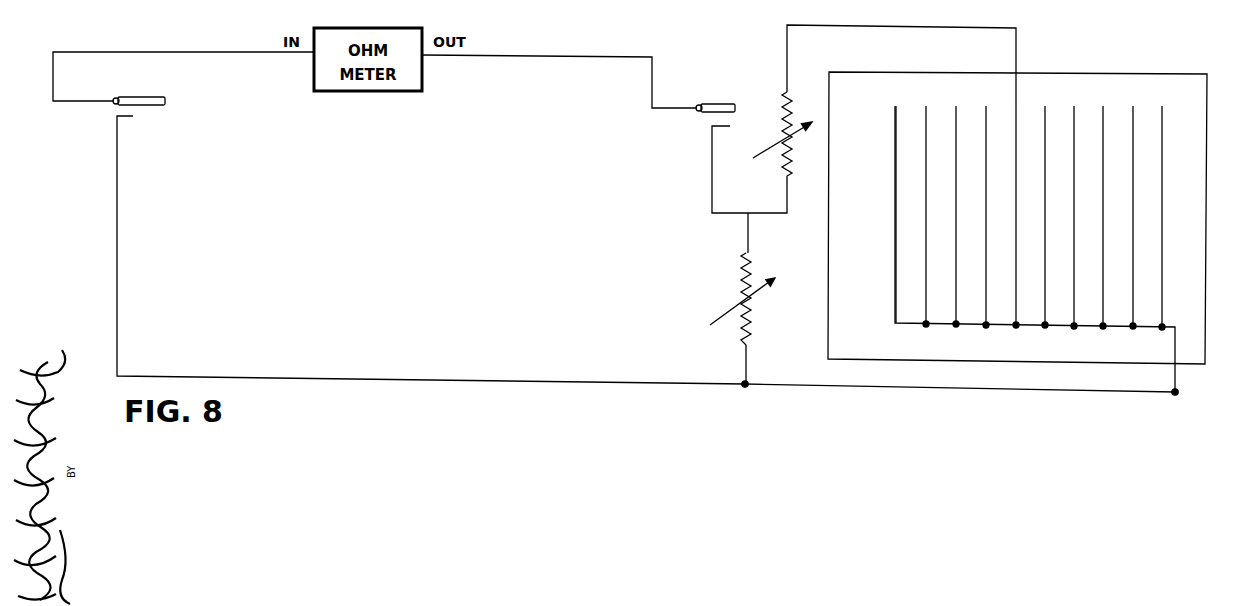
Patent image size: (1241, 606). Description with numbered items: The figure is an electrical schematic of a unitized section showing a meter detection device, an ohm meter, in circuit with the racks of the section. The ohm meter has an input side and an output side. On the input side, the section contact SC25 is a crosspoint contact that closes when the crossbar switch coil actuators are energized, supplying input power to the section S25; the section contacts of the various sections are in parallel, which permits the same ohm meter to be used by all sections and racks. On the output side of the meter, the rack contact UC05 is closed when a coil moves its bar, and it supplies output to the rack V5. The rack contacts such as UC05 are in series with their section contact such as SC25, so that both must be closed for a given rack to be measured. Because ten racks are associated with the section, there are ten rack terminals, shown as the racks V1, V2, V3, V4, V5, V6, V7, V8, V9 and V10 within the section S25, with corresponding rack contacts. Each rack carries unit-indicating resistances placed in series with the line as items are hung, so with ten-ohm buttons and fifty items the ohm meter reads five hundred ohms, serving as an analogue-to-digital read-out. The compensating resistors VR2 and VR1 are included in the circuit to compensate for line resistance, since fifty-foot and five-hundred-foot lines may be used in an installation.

The section contact SC25 is at (140, 117).
The rack contact UC05 is at (690, 116).
The compensating resistor VR2 is at (775, 135).
The compensating resistor VR1 is at (739, 300).
The section S25 is at (1017, 232).
The rack V1 is at (883, 104).
The rack V2 is at (913, 104).
The rack V3 is at (943, 104).
The rack V4 is at (973, 104).
The rack V5 is at (1003, 104).
The rack V6 is at (1032, 104).
The rack V7 is at (1061, 104).
The rack V8 is at (1090, 104).
The rack V9 is at (1120, 104).
The rack V10 is at (1149, 104).